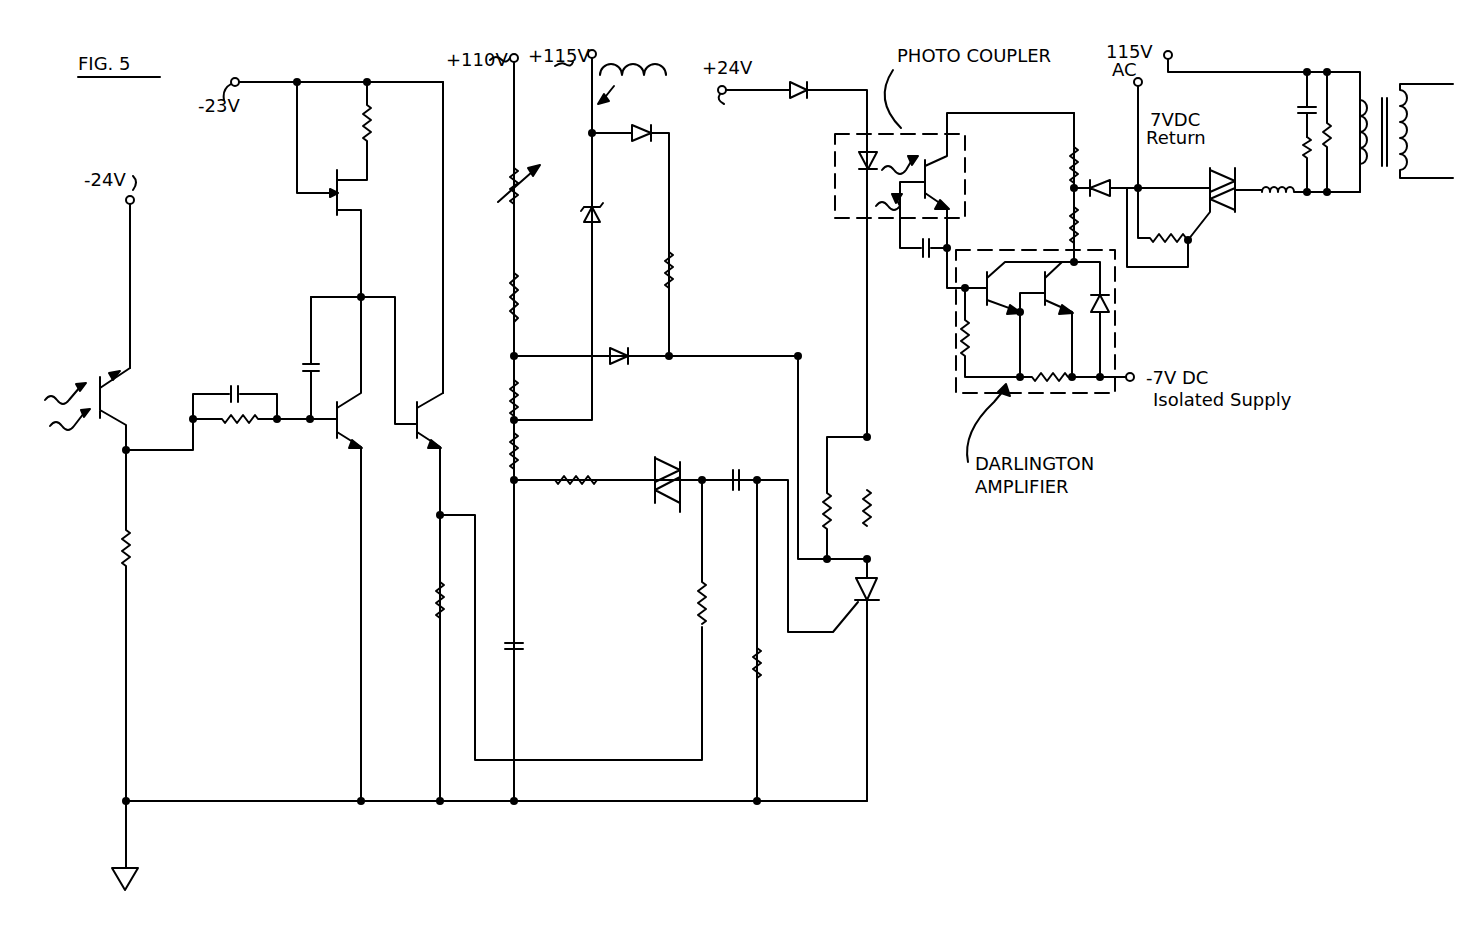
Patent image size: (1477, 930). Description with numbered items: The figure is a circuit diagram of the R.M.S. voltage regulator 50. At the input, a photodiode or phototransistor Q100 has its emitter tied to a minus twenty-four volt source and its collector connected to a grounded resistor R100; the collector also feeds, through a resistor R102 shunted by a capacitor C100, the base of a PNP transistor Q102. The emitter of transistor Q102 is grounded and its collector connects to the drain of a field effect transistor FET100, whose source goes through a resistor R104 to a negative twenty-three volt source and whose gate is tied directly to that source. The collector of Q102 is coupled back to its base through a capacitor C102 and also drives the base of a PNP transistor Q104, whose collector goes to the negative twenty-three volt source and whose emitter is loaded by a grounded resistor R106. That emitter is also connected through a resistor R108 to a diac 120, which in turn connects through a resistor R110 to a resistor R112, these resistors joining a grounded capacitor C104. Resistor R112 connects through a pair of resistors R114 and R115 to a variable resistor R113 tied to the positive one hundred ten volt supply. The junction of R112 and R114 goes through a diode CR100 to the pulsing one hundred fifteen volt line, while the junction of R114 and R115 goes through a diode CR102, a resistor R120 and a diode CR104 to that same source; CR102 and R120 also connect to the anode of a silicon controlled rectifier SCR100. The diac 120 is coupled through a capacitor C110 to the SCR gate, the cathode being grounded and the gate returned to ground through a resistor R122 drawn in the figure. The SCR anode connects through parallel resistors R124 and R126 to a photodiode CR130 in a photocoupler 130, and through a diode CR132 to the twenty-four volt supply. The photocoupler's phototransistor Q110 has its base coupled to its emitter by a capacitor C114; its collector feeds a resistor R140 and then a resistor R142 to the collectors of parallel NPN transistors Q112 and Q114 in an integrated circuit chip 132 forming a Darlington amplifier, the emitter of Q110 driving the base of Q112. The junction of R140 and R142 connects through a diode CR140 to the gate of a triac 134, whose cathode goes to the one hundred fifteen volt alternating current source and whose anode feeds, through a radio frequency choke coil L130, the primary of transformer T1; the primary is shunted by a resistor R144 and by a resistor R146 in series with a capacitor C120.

The phototransistor Q100 is at (104, 422).
The grounded resistor R100 is at (133, 547).
The resistor R102 is at (230, 429).
The capacitor C100 is at (240, 388).
The capacitor C102 is at (308, 360).
The PNP transistor Q102 is at (332, 436).
The PNP transistor Q104 is at (414, 434).
The resistor R104 is at (370, 132).
The field effect transistor FET100 is at (333, 206).
The grounded resistor R106 is at (432, 600).
The variable resistor R113 is at (523, 195).
The resistor R115 is at (510, 297).
The resistor R114 is at (520, 398).
The resistor R112 is at (510, 448).
The grounded capacitor C104 is at (524, 647).
The diode CR100 is at (595, 217).
The diode CR104 is at (640, 121).
The resistor R120 is at (679, 266).
The diode CR102 is at (620, 366).
The resistor R110 is at (563, 475).
The diac 120 is at (666, 457).
The capacitor C110 is at (734, 470).
The resistor R108 is at (698, 604).
The resistor R122 is at (761, 658).
The parallel resistor R124 is at (834, 488).
The parallel resistor R126 is at (871, 508).
The silicon controlled rectifier SCR100 is at (869, 589).
The diode CR132 is at (800, 82).
The photocoupler 130 is at (912, 124).
The photodiode CR130 is at (850, 164).
The phototransistor Q110 is at (936, 182).
The capacitor C114 is at (919, 260).
The resistor R140 is at (1065, 170).
The diode CR140 is at (1100, 176).
The resistor R142 is at (1068, 238).
The integrated circuit chip 132 is at (1088, 385).
The NPN transistor Q112 is at (988, 308).
The NPN transistor Q114 is at (1038, 308).
The triac 134 is at (1229, 210).
The radio frequency choke coil L130 is at (1281, 198).
The capacitor C120 is at (1300, 109).
The resistor R144 is at (1318, 135).
The resistor R146 is at (1302, 151).
The transformer T1 is at (1400, 72).
The R.M.S. voltage regulator 50 is at (1209, 599).